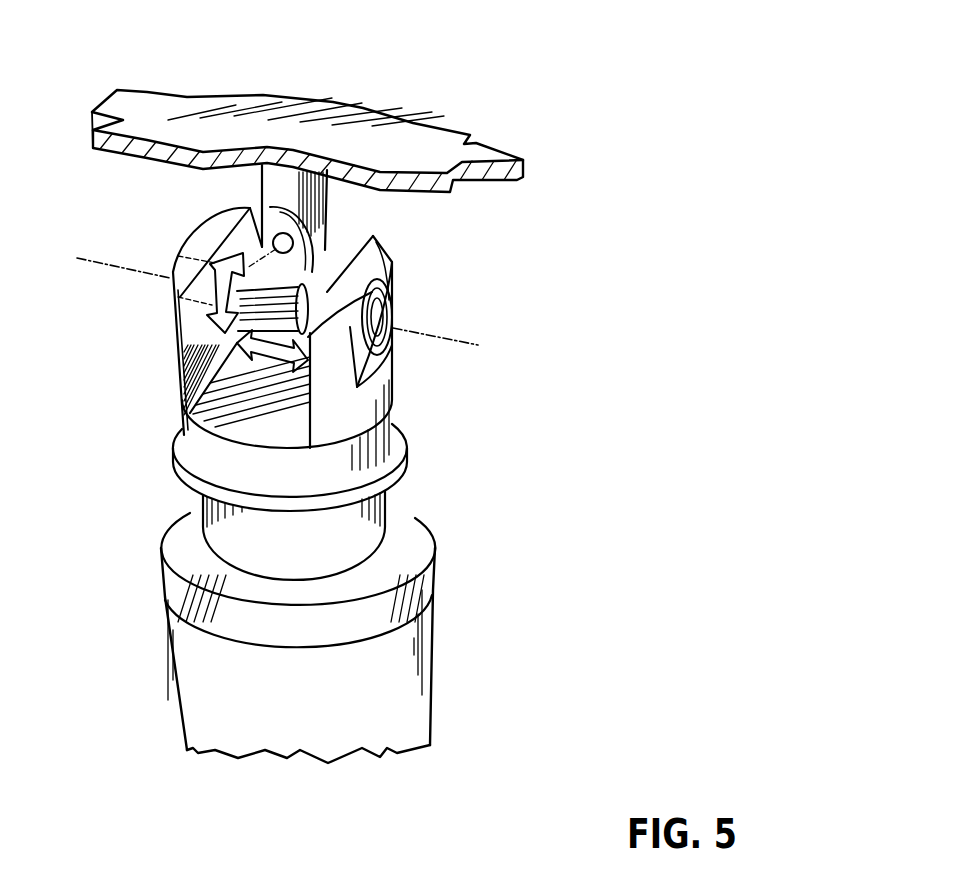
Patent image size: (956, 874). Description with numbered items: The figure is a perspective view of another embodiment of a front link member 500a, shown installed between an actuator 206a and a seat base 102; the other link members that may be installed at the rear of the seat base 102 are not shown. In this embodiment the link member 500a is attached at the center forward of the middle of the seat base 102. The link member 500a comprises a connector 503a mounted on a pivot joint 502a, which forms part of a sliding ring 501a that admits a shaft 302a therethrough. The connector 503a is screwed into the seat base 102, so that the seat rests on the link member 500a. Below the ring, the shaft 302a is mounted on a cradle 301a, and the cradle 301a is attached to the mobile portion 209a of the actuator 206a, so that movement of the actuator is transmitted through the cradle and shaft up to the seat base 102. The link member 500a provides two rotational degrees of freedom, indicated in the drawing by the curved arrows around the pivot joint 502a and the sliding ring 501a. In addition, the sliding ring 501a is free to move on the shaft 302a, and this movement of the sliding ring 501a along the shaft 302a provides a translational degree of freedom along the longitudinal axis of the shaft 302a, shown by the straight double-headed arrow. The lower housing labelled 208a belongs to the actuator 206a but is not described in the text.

The seat base 102 is at (447, 122).
The link member 500a is at (221, 204).
The sliding ring 501a is at (277, 314).
The pivot joint 502a is at (283, 253).
The connector 503a is at (325, 193).
The shaft 302a is at (393, 313).
The cradle 301a is at (220, 450).
The mobile portion 209a is at (367, 502).
The actuator 206a is at (502, 628).
The base housing 208a is at (433, 663).